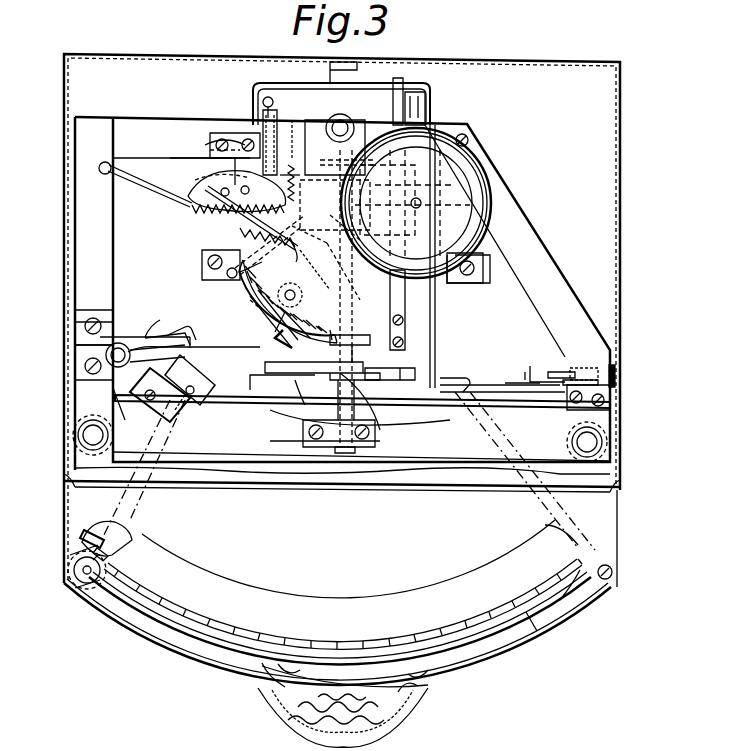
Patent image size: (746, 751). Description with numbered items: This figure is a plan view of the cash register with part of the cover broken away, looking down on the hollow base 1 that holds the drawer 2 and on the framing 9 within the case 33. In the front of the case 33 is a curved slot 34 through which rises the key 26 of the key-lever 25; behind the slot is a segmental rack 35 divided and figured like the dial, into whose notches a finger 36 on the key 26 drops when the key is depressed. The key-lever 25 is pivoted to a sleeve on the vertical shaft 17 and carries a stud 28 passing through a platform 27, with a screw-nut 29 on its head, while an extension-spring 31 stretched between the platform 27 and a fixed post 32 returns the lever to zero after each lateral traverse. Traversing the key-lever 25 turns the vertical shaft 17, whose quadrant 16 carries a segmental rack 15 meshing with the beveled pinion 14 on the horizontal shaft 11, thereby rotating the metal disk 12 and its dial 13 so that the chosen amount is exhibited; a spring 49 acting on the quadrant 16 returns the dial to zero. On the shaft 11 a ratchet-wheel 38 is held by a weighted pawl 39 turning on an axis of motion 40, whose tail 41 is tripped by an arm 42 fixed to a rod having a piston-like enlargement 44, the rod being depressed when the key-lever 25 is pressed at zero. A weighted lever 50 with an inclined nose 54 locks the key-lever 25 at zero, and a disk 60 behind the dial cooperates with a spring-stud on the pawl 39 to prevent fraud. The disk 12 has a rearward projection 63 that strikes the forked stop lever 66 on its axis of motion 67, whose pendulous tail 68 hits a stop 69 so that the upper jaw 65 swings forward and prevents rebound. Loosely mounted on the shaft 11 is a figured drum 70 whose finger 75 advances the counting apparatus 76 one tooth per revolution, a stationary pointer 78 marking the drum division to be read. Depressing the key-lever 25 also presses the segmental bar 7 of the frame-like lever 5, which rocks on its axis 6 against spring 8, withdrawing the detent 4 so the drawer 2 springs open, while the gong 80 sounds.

The base 1 is at (342, 318).
The drawer 2 is at (448, 678).
The detent 4 is at (350, 66).
The frame-like lever 5 is at (258, 83).
The axis 6 is at (395, 275).
The segmental bar 7 is at (415, 412).
The spring 8 is at (420, 98).
The framing 9 is at (341, 293).
The horizontal shaft 11 is at (340, 455).
The metal disk 12 is at (482, 390).
The dial 13 is at (518, 380).
The beveled pinion 14 is at (384, 353).
The segmental rack 15 is at (275, 318).
The quadrant 16 is at (365, 319).
The vertical shaft 17 is at (335, 230).
The key-lever 25 is at (212, 426).
The key 26 is at (84, 590).
The platform 27 is at (262, 333).
The stud 28 is at (245, 285).
The screw-nut 29 is at (258, 310).
The extension-spring 31 is at (276, 112).
The fixed post 32 is at (262, 100).
The case 33 is at (63, 287).
The curved slot 34 is at (516, 648).
The segmental rack 35 is at (574, 600).
The finger 36 is at (130, 533).
The ratchet-wheel 38 is at (416, 372).
The weighted pawl 39 is at (292, 405).
The axis of motion 40 is at (205, 408).
The tail 41 is at (162, 410).
The arm 42 is at (158, 346).
The piston-like enlargement 44 is at (118, 338).
The spring 49 is at (210, 228).
The weighted lever 50 is at (255, 238).
The inclined nose 54 is at (390, 295).
The disk 60 is at (452, 385).
The rearward projection 63 is at (552, 372).
The upper jaw 65 is at (525, 395).
The forked stop lever 66 is at (566, 368).
The axis of motion 67 is at (580, 380).
The pendulous tail 68 is at (605, 392).
The stop 69 is at (612, 365).
The drum 70 is at (318, 145).
The finger 75 is at (300, 146).
The counting apparatus 76 is at (180, 158).
The stationary pointer 78 is at (200, 216).
The gong 80 is at (416, 205).